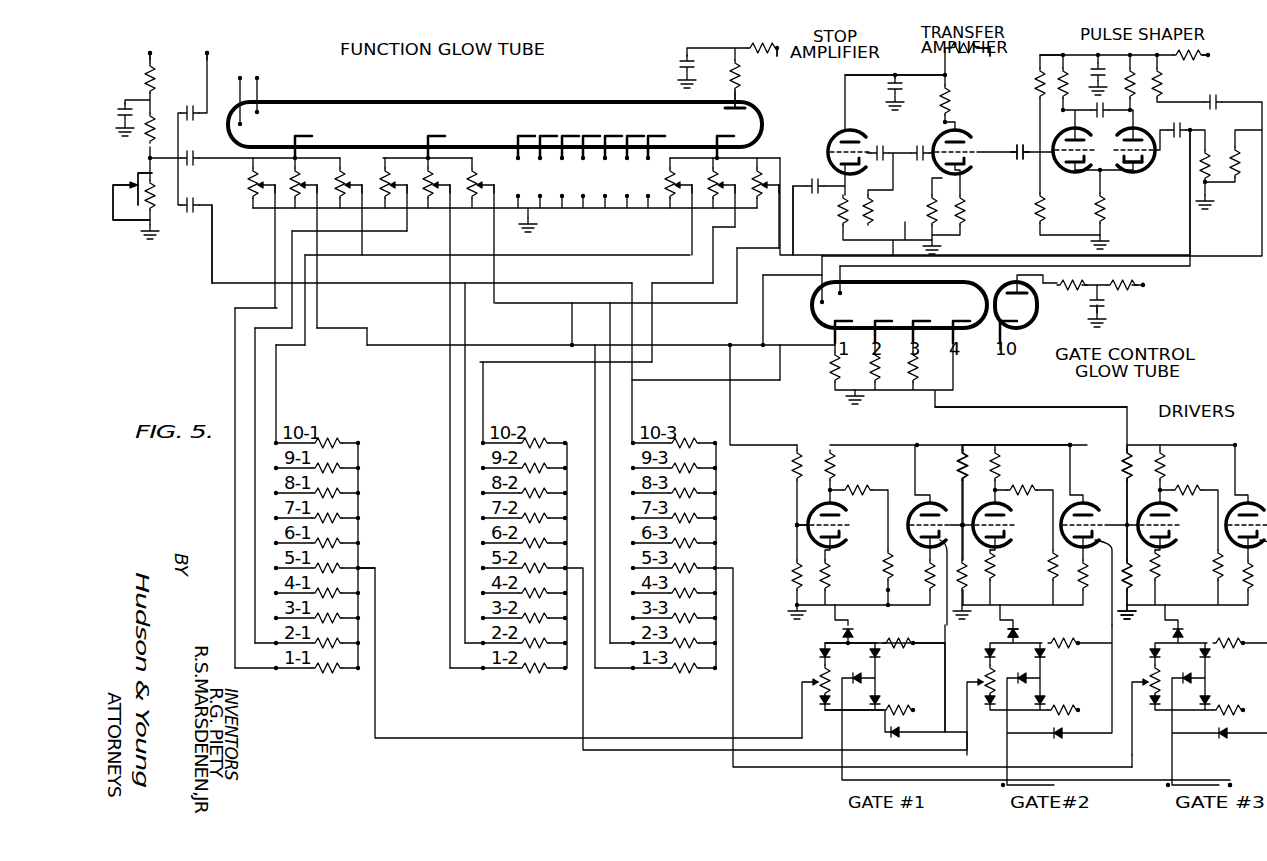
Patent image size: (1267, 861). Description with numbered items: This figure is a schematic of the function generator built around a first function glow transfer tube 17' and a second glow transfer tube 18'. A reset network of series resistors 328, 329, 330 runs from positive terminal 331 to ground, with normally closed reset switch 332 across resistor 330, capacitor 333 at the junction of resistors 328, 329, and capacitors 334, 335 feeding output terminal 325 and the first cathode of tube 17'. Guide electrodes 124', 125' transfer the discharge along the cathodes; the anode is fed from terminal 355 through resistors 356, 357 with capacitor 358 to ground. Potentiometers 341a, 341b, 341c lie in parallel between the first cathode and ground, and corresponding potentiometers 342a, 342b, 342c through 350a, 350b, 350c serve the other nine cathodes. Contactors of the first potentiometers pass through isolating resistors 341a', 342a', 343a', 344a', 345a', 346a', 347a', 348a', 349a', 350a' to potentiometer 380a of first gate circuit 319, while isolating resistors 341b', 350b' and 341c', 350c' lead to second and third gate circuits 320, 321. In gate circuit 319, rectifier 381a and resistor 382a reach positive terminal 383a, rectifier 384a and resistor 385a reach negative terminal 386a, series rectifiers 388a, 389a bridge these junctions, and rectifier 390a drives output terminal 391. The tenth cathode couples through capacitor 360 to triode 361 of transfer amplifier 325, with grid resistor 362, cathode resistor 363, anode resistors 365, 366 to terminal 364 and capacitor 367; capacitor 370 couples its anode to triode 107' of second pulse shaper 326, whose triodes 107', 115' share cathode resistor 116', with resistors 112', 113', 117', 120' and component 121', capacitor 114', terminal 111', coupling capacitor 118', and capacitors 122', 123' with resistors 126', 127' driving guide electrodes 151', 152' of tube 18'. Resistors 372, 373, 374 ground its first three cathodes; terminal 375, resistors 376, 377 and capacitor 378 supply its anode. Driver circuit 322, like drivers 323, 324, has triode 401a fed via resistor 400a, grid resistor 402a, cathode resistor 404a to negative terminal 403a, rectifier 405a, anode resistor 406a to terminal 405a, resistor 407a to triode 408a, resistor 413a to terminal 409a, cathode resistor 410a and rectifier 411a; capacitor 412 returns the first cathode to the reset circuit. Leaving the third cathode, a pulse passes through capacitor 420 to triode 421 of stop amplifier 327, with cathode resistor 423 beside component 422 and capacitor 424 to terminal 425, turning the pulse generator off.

The first function glow transfer tube 17' is at (495, 106).
The second glow transfer tube 18' is at (940, 307).
The triode 107' is at (1026, 132).
The positive potential terminal 111' is at (1212, 55).
The resistor 112' is at (1030, 43).
The resistor 113' is at (1133, 61).
The capacitor 114' is at (1066, 62).
The triode 115' is at (1160, 155).
The resistor 116' is at (1122, 218).
The resistor 117' is at (1017, 145).
The capacitor 118' is at (1104, 137).
The resistor 120' is at (1165, 79).
The resistor 121' is at (1179, 83).
The capacitor 122' is at (1232, 88).
The capacitor 123' is at (1193, 120).
The guide electrode 124' is at (282, 96).
The guide electrode 125' is at (266, 127).
The resistor 126' is at (1233, 183).
The resistor 127' is at (1182, 179).
The guide electrode 151' is at (865, 293).
The guide electrode 152' is at (797, 306).
The first gate circuit 319 is at (916, 683).
The second gate circuit 320 is at (1085, 682).
The third gate circuit 321 is at (1250, 683).
The driver circuit 322 is at (876, 516).
The driver circuit 323 is at (1050, 473).
The driver circuit 324 is at (1213, 473).
The transfer amplifier 325 is at (209, 55).
The second pulse shaper 326 is at (1248, 46).
The stop amplifier 327 is at (811, 85).
The resistor 328 is at (145, 71).
The resistor 329 is at (144, 134).
The resistor 330 is at (144, 208).
The positive potential terminal 331 is at (152, 55).
The reset switch 332 is at (138, 178).
The capacitor 333 is at (110, 109).
The first capacitor 334 is at (190, 104).
The capacitor 335 is at (188, 152).
The potentiometer 341a is at (236, 183).
The potentiometer 341b is at (269, 195).
The potentiometer 341c is at (337, 162).
The potentiometer 342a is at (398, 162).
The potentiometer 342b is at (432, 174).
The potentiometer 342c is at (483, 172).
The potentiometer 350a is at (651, 183).
The potentiometer 350b is at (701, 156).
The potentiometer 350c is at (783, 168).
The isolating resistor 341a' is at (317, 679).
The isolating resistor 341b' is at (524, 679).
The isolating resistor 341c' is at (674, 679).
The isolating resistor 342a' is at (353, 649).
The isolating resistor 343a' is at (353, 623).
The isolating resistor 344a' is at (353, 599).
The isolating resistor 345a' is at (353, 556).
The isolating resistor 346a' is at (345, 531).
The isolating resistor 347a' is at (345, 506).
The isolating resistor 348a' is at (345, 482).
The isolating resistor 349a' is at (345, 457).
The isolating resistor 350a' is at (329, 431).
The isolating resistor 350b' is at (534, 431).
The isolating resistor 350c' is at (679, 431).
The positive potential terminal 355 is at (778, 56).
The resistor 356 is at (734, 79).
The resistor 357 is at (748, 45).
The capacitor 358 is at (678, 61).
The capacitor 360 is at (928, 136).
The triode 361 is at (935, 135).
The resistor 362 is at (936, 221).
The resistor 363 is at (964, 206).
The positive potential terminal 364 is at (990, 58).
The resistor 365 is at (952, 100).
The resistor 366 is at (946, 56).
The capacitor 367 is at (893, 86).
The capacitor 370 is at (1020, 160).
The resistor 372 is at (831, 361).
The resistor 373 is at (870, 360).
The resistor 374 is at (920, 367).
The positive potential terminal 375 is at (1145, 286).
The resistor 376 is at (1081, 289).
The resistor 377 is at (1125, 289).
The capacitor 378 is at (1109, 308).
The potentiometer 380a is at (820, 672).
The rectifier 381a is at (820, 653).
The resistor 382a is at (884, 643).
The positive potential terminal 383a is at (1005, 630).
The rectifier 384a is at (821, 702).
The resistor 385a is at (884, 716).
The negative potential terminal 386a is at (912, 714).
The rectifier 388a is at (881, 654).
The rectifier 389a is at (880, 698).
The rectifier 390a is at (866, 662).
The output terminal 391 is at (1238, 770).
The resistor 400a is at (789, 464).
The triode 401a is at (804, 513).
The resistor 402a is at (788, 576).
The negative potential terminal 403a is at (796, 606).
The resistor 404a is at (828, 568).
The rectifier 405a is at (926, 444).
The resistor 406a is at (838, 467).
The resistor 407a is at (856, 489).
The triode 408a is at (950, 498).
The negative potential terminal 409a is at (886, 592).
The resistor 410a is at (928, 588).
The rectifier 411a is at (890, 735).
The capacitor 412 is at (158, 228).
The resistor 413a is at (887, 574).
The capacitor 420 is at (880, 140).
The triode 421 is at (838, 130).
The resistor 422 is at (862, 205).
The resistor 423 is at (840, 208).
The capacitor 424 is at (822, 173).
The terminal 425 is at (788, 187).